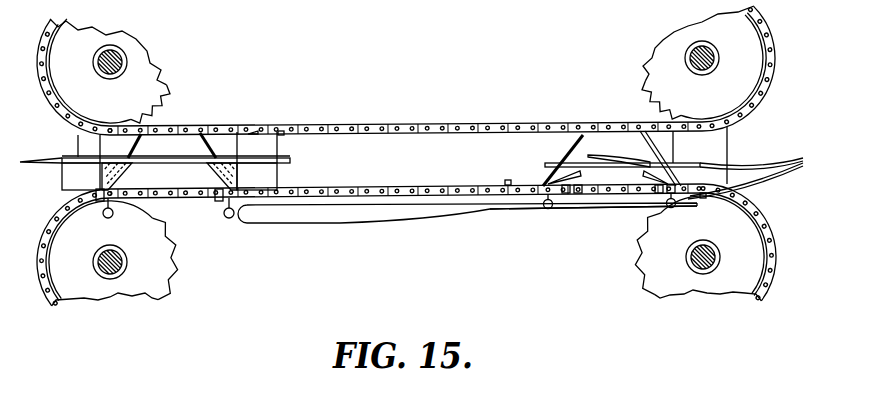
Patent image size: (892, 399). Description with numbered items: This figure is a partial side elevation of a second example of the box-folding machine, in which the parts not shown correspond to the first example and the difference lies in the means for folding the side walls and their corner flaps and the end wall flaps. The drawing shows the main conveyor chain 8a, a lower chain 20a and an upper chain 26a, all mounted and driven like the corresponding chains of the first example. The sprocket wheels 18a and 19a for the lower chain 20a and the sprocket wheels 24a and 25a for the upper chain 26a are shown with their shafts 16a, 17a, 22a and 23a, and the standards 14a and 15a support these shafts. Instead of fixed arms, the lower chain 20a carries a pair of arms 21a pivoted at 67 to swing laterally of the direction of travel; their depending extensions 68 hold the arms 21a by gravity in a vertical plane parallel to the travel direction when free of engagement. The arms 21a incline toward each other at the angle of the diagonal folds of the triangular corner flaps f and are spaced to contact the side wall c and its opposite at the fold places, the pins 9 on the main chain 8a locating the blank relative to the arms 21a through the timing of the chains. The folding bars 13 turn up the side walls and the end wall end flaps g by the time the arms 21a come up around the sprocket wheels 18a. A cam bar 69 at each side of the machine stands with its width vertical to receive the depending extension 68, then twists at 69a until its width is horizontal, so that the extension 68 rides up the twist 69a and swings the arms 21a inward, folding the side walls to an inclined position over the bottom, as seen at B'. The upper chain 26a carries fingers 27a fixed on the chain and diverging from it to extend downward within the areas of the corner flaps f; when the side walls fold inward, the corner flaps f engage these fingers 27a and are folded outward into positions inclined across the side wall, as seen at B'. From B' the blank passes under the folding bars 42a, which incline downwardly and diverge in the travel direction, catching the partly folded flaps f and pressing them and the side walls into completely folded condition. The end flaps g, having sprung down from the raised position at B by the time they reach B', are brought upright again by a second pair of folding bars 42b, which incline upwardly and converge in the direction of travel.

The main conveyor chain 8a is at (36, 199).
The pins 9 is at (62, 177).
The folding bars 13 is at (56, 158).
The standard 14a is at (74, 136).
The standard 15a is at (728, 137).
The shaft 16a is at (112, 279).
The shaft 17a is at (703, 274).
The sprocket wheel 18a is at (157, 275).
The sprocket wheel 19a is at (652, 262).
The lower chain 20a is at (366, 189).
The arms 21a is at (124, 168).
The shaft 22a is at (121, 52).
The shaft 23a is at (696, 43).
The sprocket wheel 24a is at (145, 80).
The sprocket wheel 25a is at (656, 70).
The upper chain 26a is at (378, 127).
The fingers 27a is at (131, 148).
The folding bars 42a is at (733, 167).
The folding bars 42b is at (758, 188).
The pivot 67 is at (100, 206).
The depending extensions 68 is at (112, 216).
The cam bar 69 is at (350, 211).
The twist 69a is at (433, 209).
The position B is at (176, 118).
The position B' is at (622, 186).
The side wall portion c is at (167, 165).
The triangular flap portions f is at (253, 131).
The rectangular flaps g is at (281, 133).